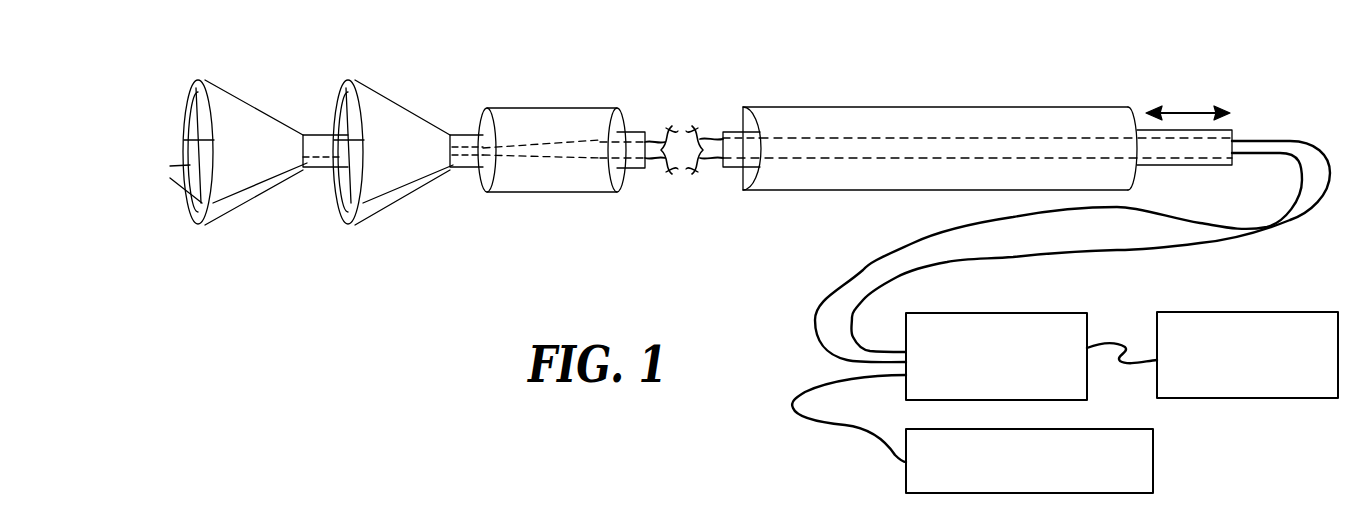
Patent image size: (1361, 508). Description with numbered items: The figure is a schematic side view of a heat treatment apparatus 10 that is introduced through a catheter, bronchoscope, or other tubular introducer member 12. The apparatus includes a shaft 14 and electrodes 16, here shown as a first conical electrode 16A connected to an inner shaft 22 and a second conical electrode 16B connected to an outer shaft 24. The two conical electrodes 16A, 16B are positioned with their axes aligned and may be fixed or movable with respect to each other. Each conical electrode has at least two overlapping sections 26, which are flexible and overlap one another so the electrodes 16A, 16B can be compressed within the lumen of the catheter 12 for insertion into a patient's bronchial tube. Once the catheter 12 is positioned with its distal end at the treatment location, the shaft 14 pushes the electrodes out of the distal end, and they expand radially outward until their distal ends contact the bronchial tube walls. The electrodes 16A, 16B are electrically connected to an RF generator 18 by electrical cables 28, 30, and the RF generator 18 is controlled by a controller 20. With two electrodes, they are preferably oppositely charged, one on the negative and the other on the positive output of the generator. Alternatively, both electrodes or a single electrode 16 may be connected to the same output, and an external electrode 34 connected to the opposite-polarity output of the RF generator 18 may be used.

The heat treatment apparatus 10 is at (1010, 57).
The tubular introducer member 12 is at (1065, 108).
The shaft 14 is at (643, 132).
The electrodes 16 is at (285, 66).
The first conical electrode 16A is at (230, 183).
The second conical electrode 16B is at (388, 178).
The RF generator 18 is at (1035, 323).
The controller 20 is at (1282, 322).
The inner shaft 22 is at (330, 165).
The outer shaft 24 is at (458, 167).
The overlapping sections 26 is at (170, 166).
The electrical cable 28 is at (307, 168).
The electrical cable 30 is at (590, 140).
The external electrode 34 is at (1140, 465).